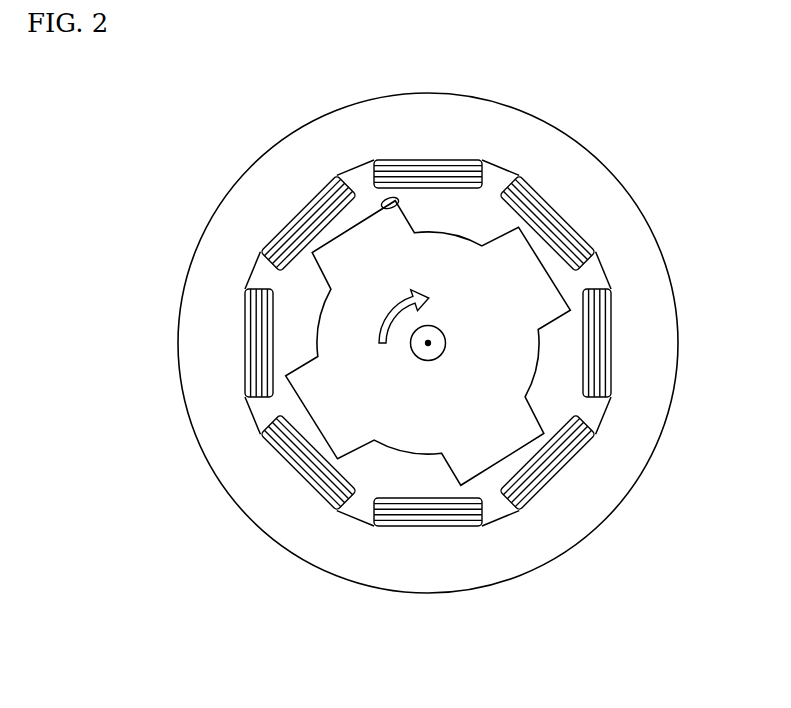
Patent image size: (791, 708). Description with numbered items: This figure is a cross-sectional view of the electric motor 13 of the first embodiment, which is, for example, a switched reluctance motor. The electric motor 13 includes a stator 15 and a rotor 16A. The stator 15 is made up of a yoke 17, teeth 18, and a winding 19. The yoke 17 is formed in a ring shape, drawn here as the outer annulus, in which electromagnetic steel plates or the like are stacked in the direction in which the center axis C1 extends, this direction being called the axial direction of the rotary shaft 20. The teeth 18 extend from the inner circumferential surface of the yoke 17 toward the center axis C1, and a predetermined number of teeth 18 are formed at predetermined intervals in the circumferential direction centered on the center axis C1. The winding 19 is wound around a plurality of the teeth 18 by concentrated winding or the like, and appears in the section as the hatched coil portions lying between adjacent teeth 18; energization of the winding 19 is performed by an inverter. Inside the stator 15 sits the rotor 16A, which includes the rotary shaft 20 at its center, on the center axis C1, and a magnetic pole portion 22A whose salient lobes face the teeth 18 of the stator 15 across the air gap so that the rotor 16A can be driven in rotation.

The electric motor 13 is at (190, 149).
The stator 15 is at (450, 108).
The yoke 17 is at (570, 157).
The winding 19 is at (483, 174).
The rotor 16A is at (548, 297).
The teeth 18 is at (386, 206).
The rotary shaft 20 is at (419, 358).
The magnetic pole portion 22A is at (493, 278).
The center axis C1 is at (428, 343).